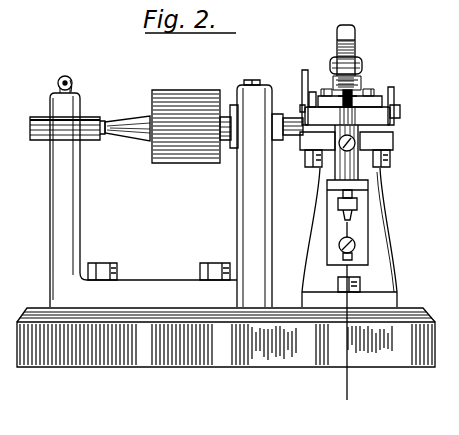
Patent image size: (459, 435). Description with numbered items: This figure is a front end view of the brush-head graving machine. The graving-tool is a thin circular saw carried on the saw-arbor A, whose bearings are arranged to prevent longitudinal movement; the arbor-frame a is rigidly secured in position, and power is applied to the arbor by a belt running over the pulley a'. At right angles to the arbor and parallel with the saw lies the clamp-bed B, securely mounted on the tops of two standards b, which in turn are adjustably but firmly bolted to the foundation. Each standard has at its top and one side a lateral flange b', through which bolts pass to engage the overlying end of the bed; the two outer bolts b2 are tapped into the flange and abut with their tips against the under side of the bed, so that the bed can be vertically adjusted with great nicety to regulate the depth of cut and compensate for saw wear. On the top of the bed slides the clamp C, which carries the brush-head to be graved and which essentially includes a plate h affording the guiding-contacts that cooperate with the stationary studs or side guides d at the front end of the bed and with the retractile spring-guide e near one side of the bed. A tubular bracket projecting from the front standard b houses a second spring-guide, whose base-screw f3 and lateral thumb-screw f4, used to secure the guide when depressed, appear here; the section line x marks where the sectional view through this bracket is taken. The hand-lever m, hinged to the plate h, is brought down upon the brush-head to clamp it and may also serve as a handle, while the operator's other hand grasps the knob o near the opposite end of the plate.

The pulley a' is at (186, 116).
The arbor-frame a is at (162, 269).
The saw-arbor A is at (295, 118).
The sliding clamp C is at (347, 98).
The stationary studs or side guides d is at (353, 90).
The retractile guide e is at (313, 96).
The clamp-plate h is at (376, 106).
The hand-lever m is at (346, 48).
The knob o is at (360, 67).
The clamp-bed B is at (356, 127).
The lateral flange b' is at (373, 152).
The outer bolts b2 is at (399, 166).
The lateral thumb-screw f4 is at (345, 143).
The base-screw f3 is at (338, 206).
The standards b is at (349, 237).
The section line x is at (345, 342).